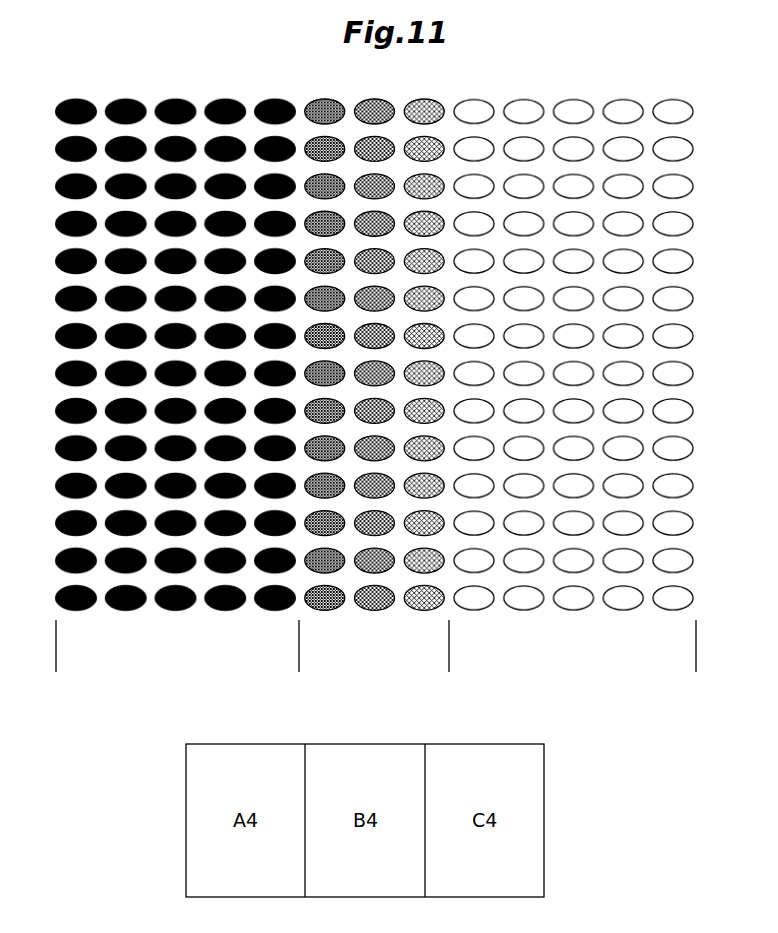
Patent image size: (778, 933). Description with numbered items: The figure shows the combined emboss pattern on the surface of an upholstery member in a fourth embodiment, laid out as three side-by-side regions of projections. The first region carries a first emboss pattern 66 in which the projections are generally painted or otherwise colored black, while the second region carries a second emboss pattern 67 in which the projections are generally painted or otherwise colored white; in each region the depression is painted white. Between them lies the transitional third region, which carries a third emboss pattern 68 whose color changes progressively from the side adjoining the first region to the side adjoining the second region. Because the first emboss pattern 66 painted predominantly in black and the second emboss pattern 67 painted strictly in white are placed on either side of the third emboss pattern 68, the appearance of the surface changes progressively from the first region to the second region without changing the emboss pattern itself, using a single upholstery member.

The first emboss pattern 66 is at (138, 664).
The third emboss pattern 68 is at (404, 661).
The second emboss pattern 67 is at (607, 659).